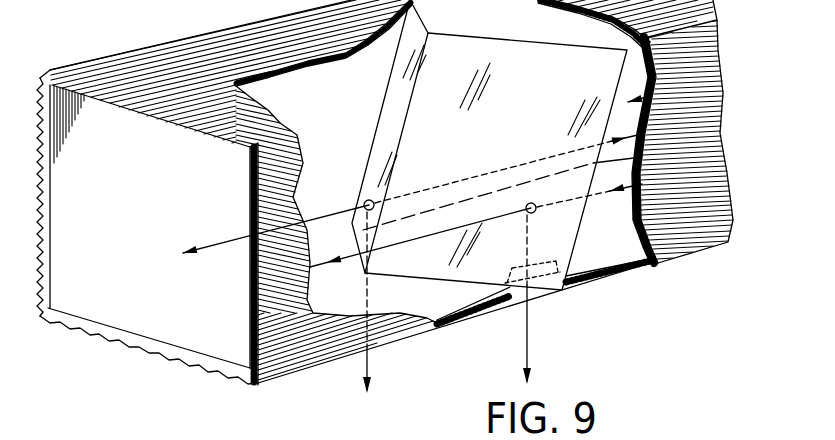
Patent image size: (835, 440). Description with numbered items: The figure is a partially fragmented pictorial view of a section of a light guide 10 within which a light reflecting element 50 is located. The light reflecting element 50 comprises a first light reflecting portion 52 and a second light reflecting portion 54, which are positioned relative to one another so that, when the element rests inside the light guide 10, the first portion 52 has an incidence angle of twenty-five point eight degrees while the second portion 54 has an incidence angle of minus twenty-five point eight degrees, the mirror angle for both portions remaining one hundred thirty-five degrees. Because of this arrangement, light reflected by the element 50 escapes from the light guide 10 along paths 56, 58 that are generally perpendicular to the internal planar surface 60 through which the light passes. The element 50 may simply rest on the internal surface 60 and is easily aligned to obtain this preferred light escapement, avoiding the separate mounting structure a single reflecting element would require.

The light guide 10 is at (403, 200).
The light reflecting element 50 is at (687, 87).
The first light reflecting portion 52 is at (556, 58).
The second light reflecting portion 54 is at (393, 105).
The light escape path 56 is at (368, 359).
The light escape path 58 is at (523, 318).
The internal planar surface 60 is at (182, 333).